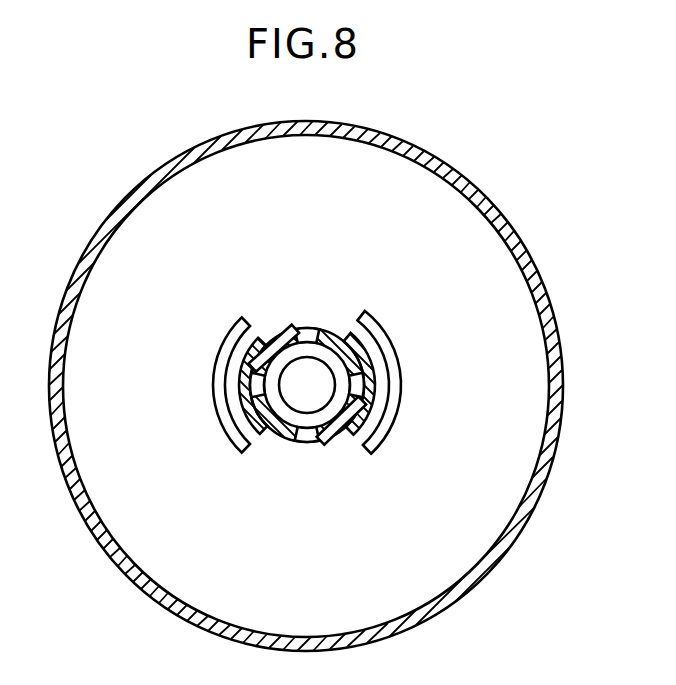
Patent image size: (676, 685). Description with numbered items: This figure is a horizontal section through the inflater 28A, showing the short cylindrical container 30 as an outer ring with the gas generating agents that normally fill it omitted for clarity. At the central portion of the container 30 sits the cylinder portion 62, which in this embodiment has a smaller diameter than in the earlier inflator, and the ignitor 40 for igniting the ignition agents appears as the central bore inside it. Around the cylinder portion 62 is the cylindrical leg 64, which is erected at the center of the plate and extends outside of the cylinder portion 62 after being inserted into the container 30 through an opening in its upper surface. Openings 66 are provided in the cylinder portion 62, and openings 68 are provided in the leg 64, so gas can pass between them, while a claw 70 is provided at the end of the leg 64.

The inflater 28A is at (547, 516).
The container 30 is at (524, 233).
The ignitor 40 is at (305, 405).
The cylinder portion 62 is at (288, 323).
The cylindrical leg 64 is at (267, 331).
The opening 66 is at (309, 328).
The opening 68 is at (238, 375).
The claw 70 is at (376, 331).